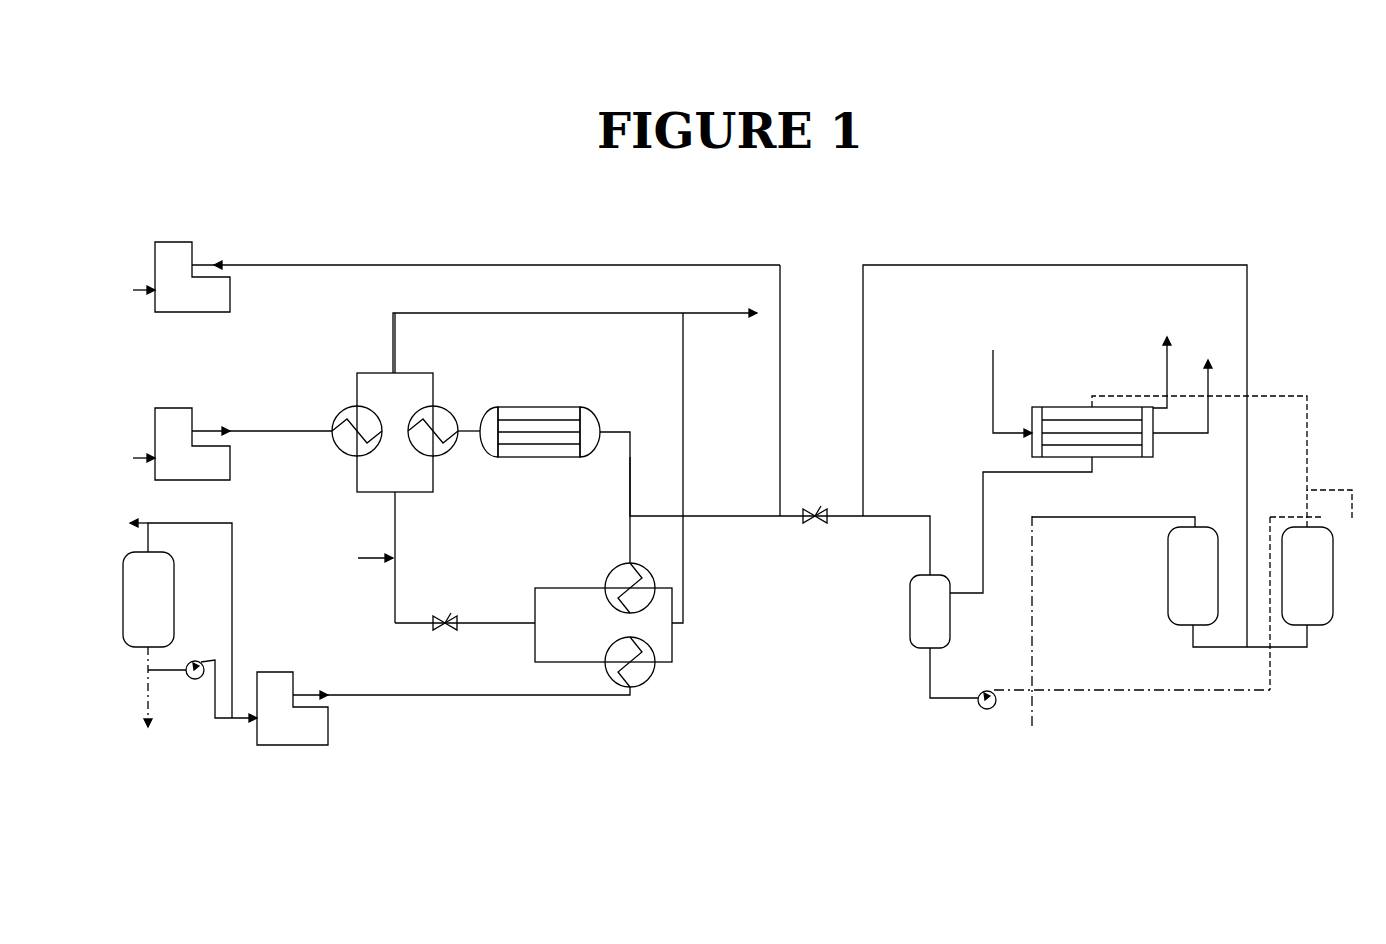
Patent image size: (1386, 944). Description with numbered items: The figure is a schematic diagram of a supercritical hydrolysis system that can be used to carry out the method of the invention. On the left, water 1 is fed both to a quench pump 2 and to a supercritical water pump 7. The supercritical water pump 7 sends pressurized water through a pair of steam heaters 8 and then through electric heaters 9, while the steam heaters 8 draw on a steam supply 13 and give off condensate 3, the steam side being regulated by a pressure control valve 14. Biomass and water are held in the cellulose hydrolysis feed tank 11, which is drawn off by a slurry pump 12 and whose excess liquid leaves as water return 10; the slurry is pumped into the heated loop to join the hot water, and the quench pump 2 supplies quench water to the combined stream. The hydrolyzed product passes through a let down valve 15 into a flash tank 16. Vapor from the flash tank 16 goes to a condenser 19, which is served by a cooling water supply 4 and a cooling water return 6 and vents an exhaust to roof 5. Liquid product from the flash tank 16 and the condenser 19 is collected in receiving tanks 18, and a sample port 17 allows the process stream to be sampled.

The water 1 is at (132, 373).
The quench pump 2 is at (467, 379).
The condensate 3 is at (575, 449).
The cooling water supply 4 is at (1007, 375).
The exhaust to roof 5 is at (1165, 355).
The cooling water return 6 is at (1185, 378).
The supercritical water pump 7 is at (243, 444).
The steam heaters 8 is at (502, 500).
The electric heaters 9 is at (694, 491).
The water return 10 is at (124, 639).
The cellulose hydrolysis feed tank 11 is at (190, 622).
The slurry pump 12 is at (443, 709).
The steam supply 13 is at (355, 558).
The pressure control valve 14 is at (465, 641).
The let down valve 15 is at (815, 533).
The flash tank 16 is at (952, 642).
The sample port 17 is at (1186, 581).
The receiving tanks 18 is at (1182, 568).
The condenser 19 is at (1052, 407).